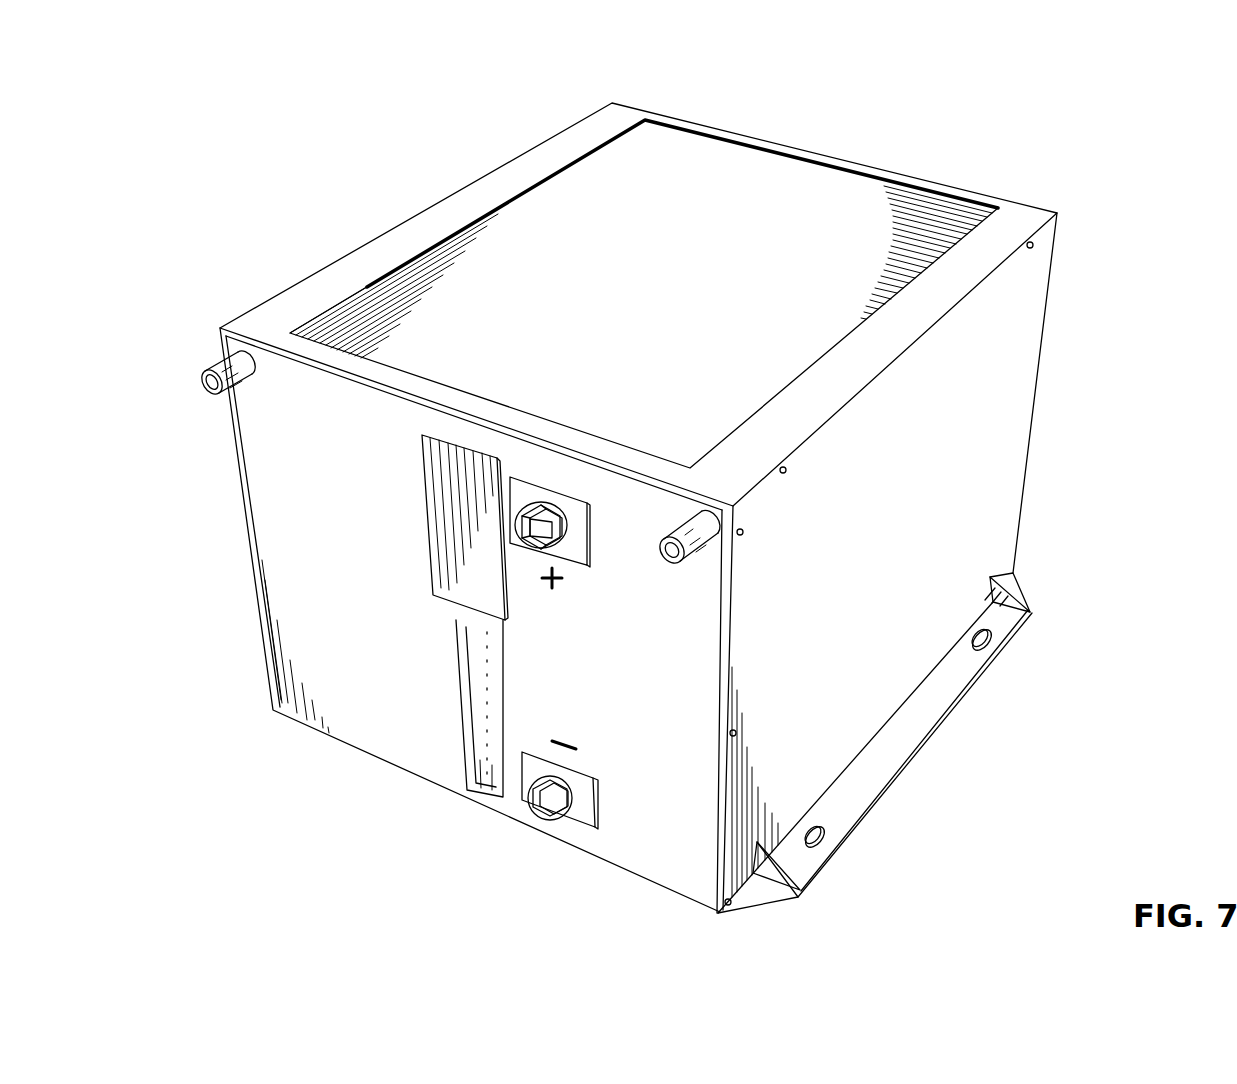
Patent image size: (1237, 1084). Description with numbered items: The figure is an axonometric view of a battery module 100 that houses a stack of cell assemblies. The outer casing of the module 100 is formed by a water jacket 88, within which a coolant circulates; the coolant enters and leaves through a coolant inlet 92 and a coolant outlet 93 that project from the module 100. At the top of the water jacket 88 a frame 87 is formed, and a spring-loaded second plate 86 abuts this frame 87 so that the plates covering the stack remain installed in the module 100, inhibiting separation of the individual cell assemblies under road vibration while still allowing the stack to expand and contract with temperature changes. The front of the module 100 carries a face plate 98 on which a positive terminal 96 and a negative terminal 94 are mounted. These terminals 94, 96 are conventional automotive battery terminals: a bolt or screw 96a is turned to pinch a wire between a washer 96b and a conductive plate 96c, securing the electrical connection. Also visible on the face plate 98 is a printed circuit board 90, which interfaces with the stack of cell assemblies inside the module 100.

The battery module 100 is at (984, 146).
The second plate 86 is at (867, 218).
The frame 87 is at (432, 393).
The water jacket 88 is at (1008, 362).
The printed circuit board 90 is at (473, 570).
The coolant inlet 92 is at (249, 395).
The coolant outlet 93 is at (699, 556).
The negative terminal 94 is at (548, 811).
The positive terminal 96 is at (570, 527).
The bolt or screw 96a is at (528, 540).
The washer 96b is at (563, 553).
The conductive plate 96c is at (575, 540).
The face plate 98 is at (263, 473).